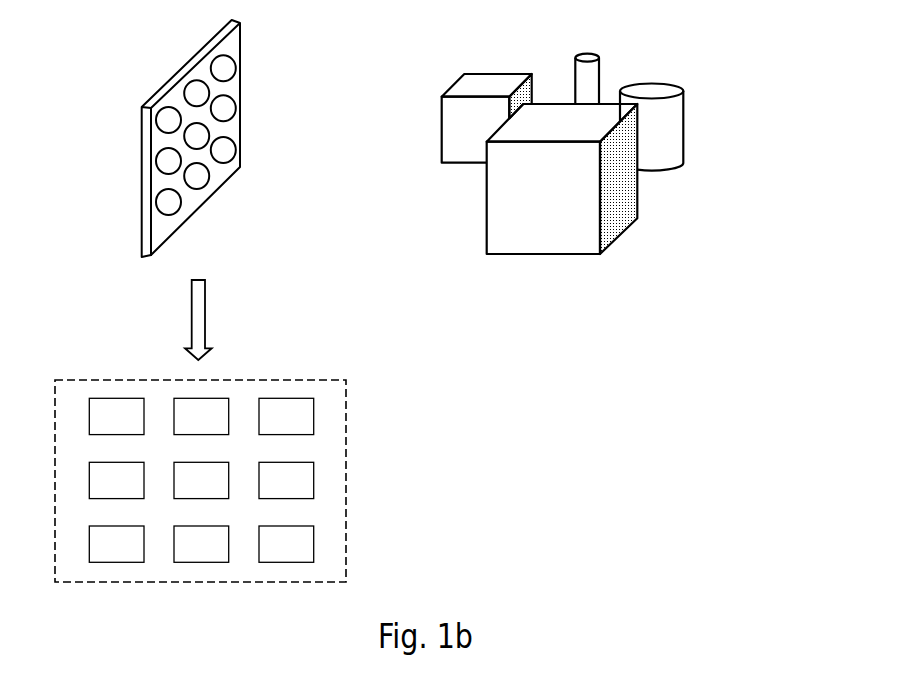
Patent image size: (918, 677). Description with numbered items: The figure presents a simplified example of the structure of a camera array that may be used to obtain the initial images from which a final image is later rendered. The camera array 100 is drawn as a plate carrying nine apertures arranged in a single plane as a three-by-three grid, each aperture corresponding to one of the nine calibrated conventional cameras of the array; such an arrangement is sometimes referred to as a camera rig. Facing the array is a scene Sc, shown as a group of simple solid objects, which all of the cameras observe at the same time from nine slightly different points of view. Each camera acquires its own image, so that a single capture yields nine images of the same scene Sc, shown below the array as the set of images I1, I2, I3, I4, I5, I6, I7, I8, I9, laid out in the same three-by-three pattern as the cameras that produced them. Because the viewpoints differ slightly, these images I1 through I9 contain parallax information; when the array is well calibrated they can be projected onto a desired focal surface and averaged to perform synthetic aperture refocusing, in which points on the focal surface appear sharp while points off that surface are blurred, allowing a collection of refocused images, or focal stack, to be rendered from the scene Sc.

The multi-aperture imaging device / lens array 100 is at (148, 82).
The scene Sc is at (710, 77).
The image I1 is at (116, 416).
The image I2 is at (201, 416).
The image I3 is at (286, 416).
The image I4 is at (116, 480).
The image I5 is at (201, 480).
The image I6 is at (286, 480).
The image I7 is at (116, 544).
The image I8 is at (201, 544).
The image I9 is at (286, 544).